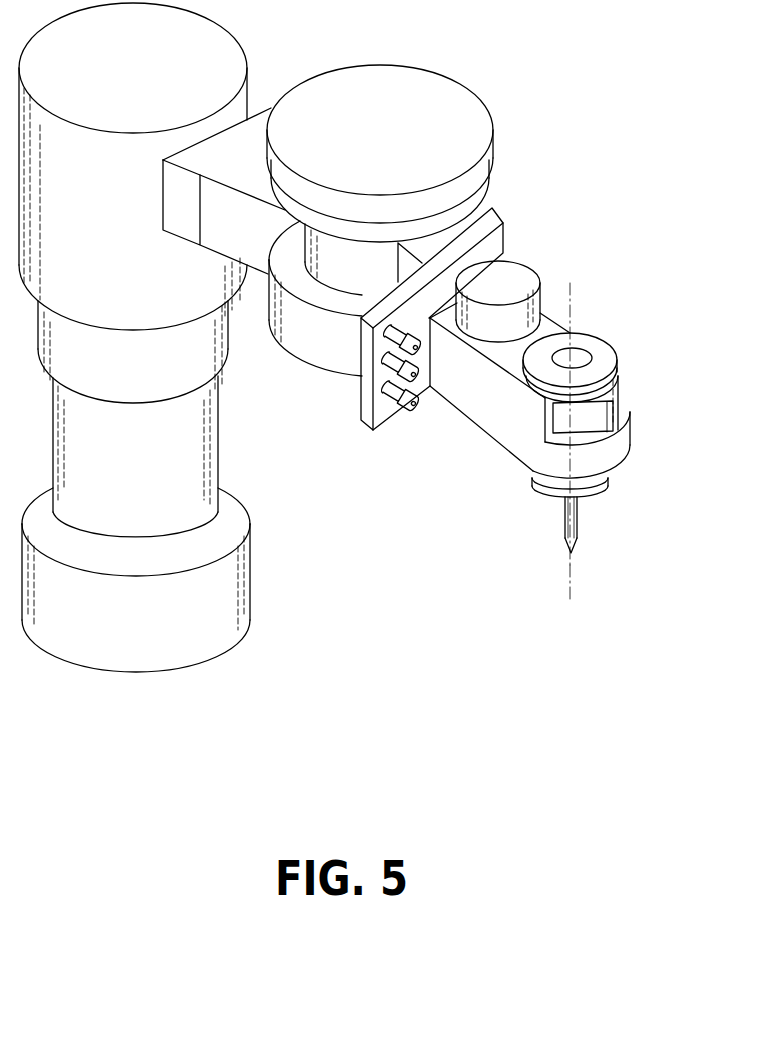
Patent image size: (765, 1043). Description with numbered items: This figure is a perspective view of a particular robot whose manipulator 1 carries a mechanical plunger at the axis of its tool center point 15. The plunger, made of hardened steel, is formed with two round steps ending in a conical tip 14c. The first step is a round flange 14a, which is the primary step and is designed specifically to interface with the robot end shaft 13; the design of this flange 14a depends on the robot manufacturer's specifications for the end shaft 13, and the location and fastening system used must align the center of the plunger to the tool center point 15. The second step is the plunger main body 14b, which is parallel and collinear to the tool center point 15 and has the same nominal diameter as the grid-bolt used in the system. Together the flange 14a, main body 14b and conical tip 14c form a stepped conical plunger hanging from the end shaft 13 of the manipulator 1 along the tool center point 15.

The robot manipulator 1 is at (610, 410).
The robot end shaft 13 is at (600, 484).
The round flange 14a is at (596, 491).
The plunger main body 14b is at (580, 527).
The conical tip 14c is at (576, 553).
The tool center point 15 is at (575, 573).